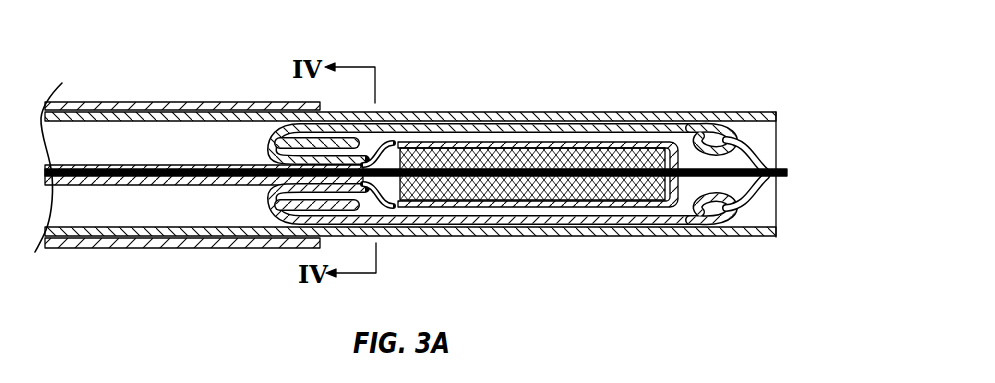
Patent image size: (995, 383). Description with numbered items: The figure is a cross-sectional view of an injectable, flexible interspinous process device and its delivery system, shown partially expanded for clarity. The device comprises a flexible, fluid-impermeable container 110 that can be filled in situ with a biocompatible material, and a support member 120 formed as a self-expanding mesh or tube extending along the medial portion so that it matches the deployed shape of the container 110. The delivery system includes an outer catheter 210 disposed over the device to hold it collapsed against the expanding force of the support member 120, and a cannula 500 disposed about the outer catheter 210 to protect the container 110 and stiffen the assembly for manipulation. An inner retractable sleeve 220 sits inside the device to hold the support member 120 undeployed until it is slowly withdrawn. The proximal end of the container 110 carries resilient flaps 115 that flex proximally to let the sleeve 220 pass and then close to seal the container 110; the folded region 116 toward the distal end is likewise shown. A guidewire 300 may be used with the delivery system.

The container 110 is at (483, 218).
The flaps 115 is at (294, 143).
The distal fold 116 is at (688, 133).
The support member 120 is at (460, 162).
The outer catheter 210 is at (760, 112).
The inner retractable sleeve 220 is at (588, 203).
The guidewire 300 is at (787, 172).
The cannula 500 is at (192, 102).